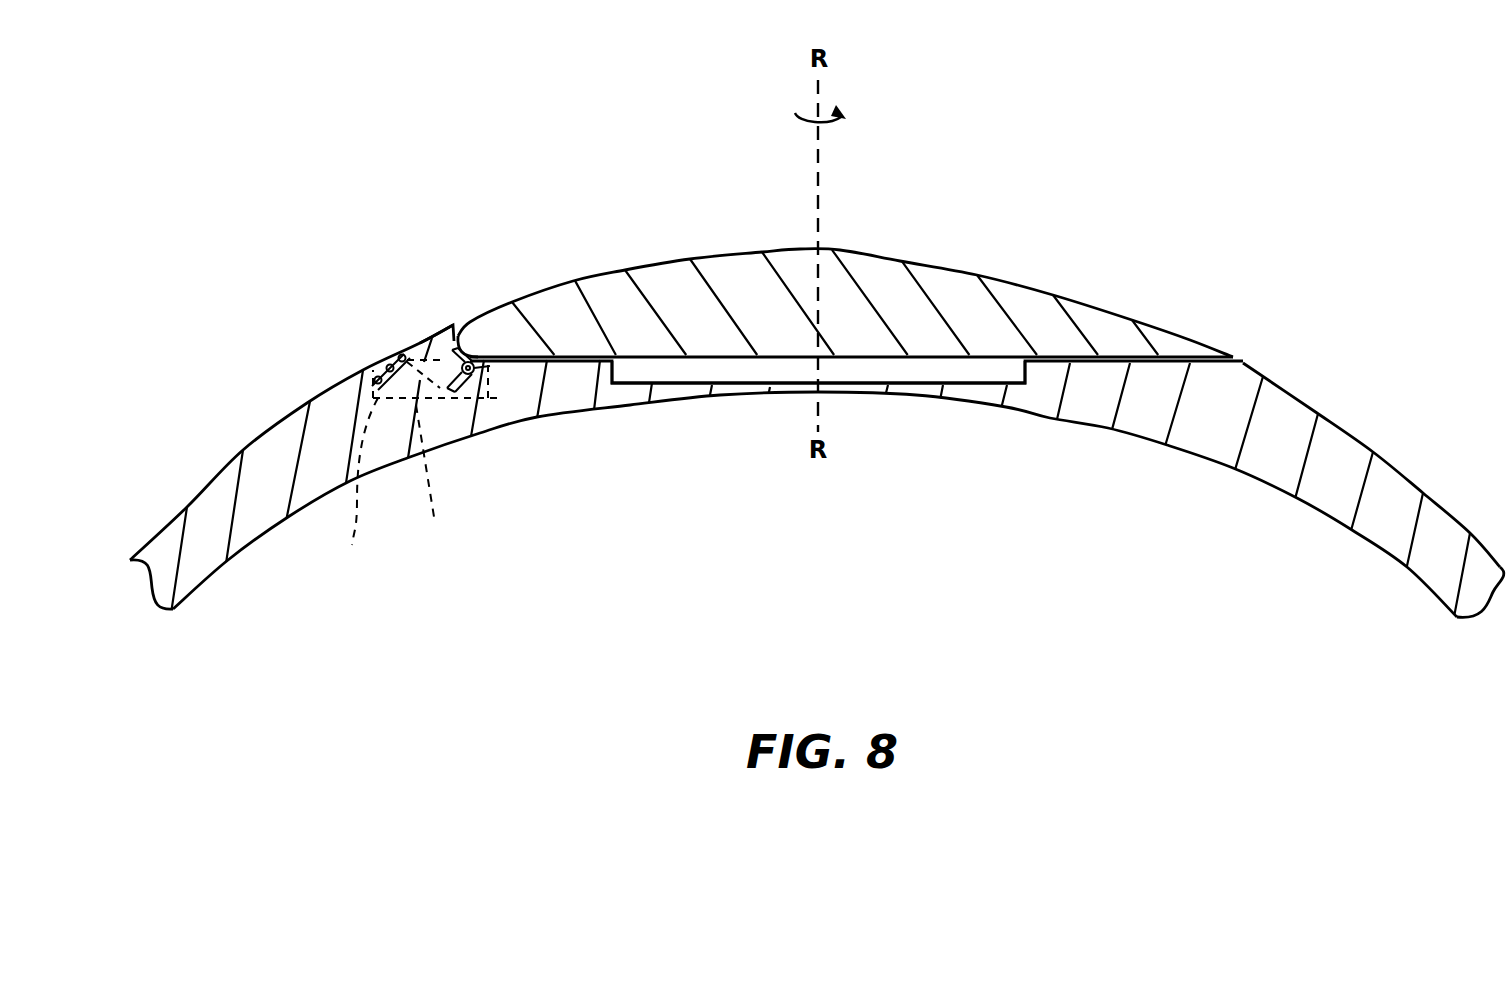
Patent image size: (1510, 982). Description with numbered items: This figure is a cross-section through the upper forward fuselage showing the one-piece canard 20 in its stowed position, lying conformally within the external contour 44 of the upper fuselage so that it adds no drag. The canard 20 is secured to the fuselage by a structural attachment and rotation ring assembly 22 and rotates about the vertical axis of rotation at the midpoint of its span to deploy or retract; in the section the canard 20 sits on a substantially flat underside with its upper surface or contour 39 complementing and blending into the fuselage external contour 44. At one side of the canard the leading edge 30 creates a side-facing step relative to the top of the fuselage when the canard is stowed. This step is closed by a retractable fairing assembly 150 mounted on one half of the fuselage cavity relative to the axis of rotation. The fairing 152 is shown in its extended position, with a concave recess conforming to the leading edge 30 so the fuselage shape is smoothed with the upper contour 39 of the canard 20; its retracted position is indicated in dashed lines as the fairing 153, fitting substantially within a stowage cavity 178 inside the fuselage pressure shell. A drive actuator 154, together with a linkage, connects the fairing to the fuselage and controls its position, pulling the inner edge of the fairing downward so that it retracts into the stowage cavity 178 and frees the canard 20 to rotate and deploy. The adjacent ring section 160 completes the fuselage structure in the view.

The canard 20 is at (720, 268).
The structural attachment and rotation ring assembly 22 is at (884, 387).
The leading edge 30 is at (476, 327).
The upper surface or contour 39 is at (878, 253).
The external contour 44 is at (157, 533).
The retractable fairing assembly 150 is at (383, 350).
The fairing 152 is at (438, 386).
The fairing in retracted position 153 is at (443, 481).
The drive actuator 154 is at (486, 368).
The ring frame 160 is at (1317, 513).
The stowage cavity 178 is at (346, 487).